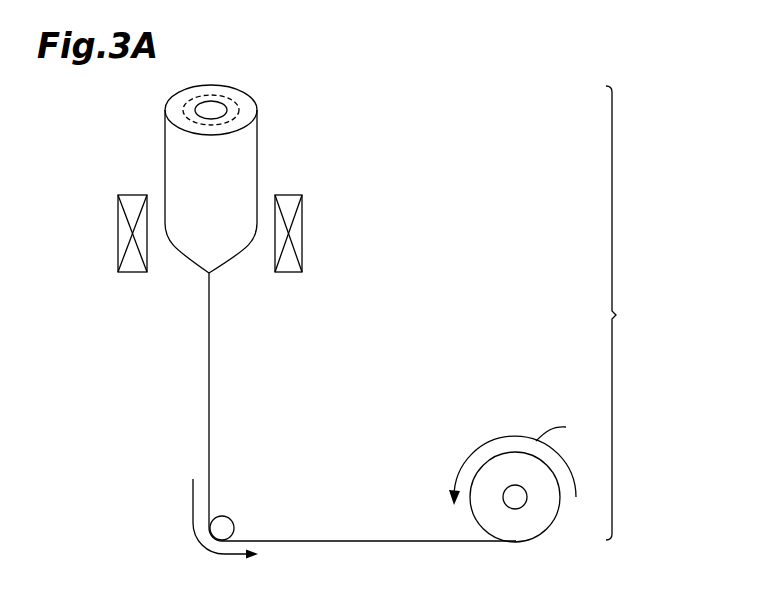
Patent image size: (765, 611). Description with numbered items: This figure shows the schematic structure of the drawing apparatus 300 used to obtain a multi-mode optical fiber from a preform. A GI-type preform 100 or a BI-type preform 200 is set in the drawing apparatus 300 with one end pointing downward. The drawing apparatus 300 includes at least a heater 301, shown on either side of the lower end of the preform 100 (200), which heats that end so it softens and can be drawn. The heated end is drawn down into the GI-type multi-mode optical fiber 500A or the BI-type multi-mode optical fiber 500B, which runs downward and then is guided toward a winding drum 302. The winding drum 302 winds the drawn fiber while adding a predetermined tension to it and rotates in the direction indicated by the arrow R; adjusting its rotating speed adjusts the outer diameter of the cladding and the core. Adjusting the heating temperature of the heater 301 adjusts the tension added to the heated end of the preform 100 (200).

The GI-type preform 100 is at (276, 179).
The BI-type preform 200 is at (257, 130).
The heater 301 is at (118, 232).
The GI-type multi-mode optical fiber 500A is at (354, 416).
The BI-type multi-mode optical fiber 500B is at (222, 418).
The winding drum 302 is at (540, 518).
The drawing apparatus 300 is at (632, 313).